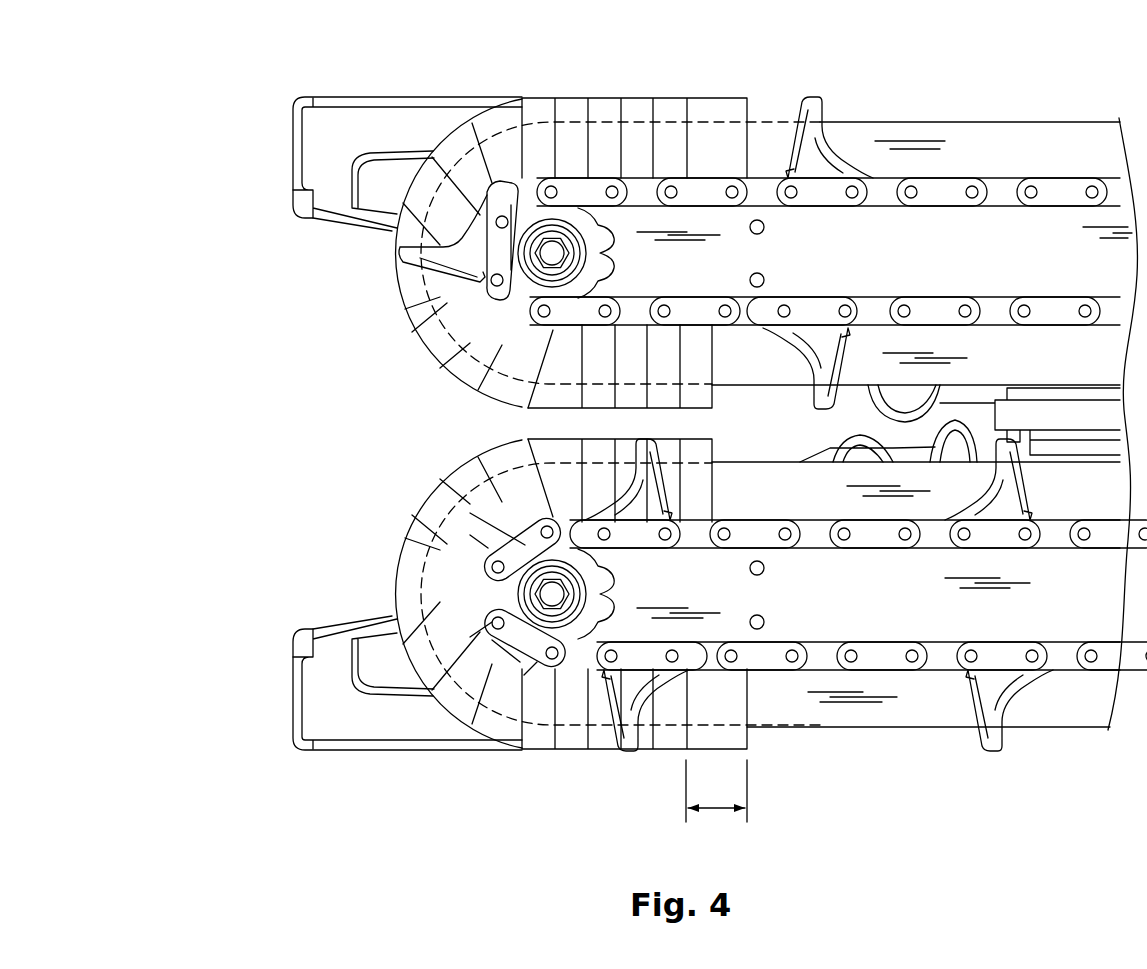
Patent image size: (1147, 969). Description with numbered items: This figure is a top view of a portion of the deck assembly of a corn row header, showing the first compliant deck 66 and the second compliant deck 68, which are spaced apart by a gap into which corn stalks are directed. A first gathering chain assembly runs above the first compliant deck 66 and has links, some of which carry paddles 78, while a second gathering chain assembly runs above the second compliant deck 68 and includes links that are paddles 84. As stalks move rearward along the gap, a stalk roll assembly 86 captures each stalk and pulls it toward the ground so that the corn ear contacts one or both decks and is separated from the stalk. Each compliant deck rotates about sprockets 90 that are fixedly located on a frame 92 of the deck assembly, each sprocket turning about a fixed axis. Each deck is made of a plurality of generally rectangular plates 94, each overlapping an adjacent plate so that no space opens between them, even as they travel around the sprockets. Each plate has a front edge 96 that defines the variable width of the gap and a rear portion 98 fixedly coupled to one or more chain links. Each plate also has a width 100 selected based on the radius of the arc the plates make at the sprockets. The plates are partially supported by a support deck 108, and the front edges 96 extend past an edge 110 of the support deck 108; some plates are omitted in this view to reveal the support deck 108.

The first compliant deck 66 is at (290, 283).
The second compliant deck 68 is at (297, 577).
The paddles 78 is at (820, 150).
The paddles 84 is at (992, 690).
The stalk roll assembly 86 is at (845, 435).
The sprockets 90 is at (567, 213).
The frame 92 is at (320, 147).
The plates 94 is at (607, 110).
The front edge 96 is at (693, 400).
The rear portion 98 is at (418, 328).
The width 100 is at (715, 810).
The support deck 108 is at (1045, 145).
The edge 110 is at (735, 395).